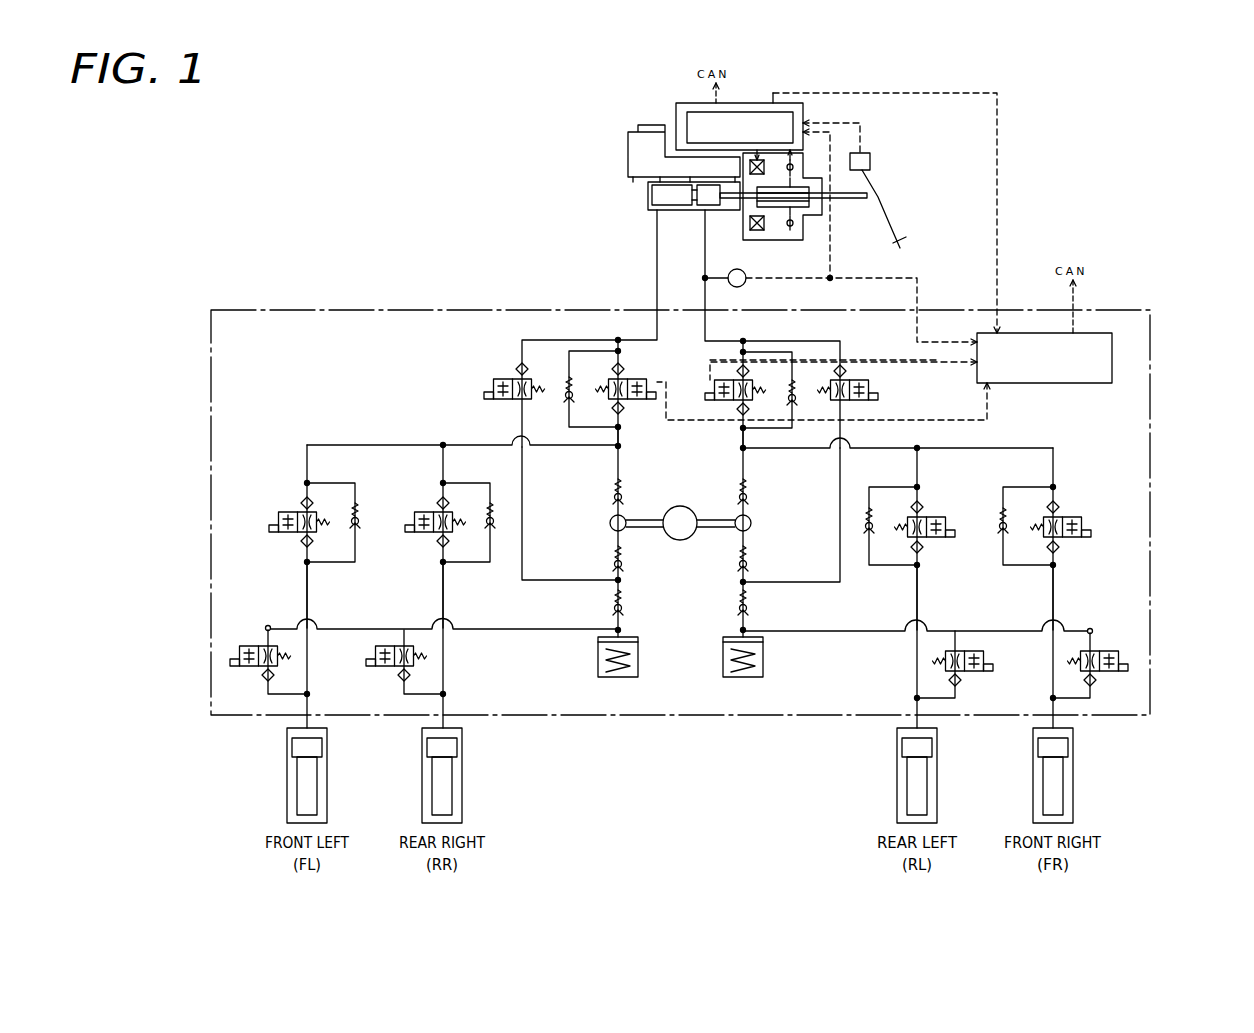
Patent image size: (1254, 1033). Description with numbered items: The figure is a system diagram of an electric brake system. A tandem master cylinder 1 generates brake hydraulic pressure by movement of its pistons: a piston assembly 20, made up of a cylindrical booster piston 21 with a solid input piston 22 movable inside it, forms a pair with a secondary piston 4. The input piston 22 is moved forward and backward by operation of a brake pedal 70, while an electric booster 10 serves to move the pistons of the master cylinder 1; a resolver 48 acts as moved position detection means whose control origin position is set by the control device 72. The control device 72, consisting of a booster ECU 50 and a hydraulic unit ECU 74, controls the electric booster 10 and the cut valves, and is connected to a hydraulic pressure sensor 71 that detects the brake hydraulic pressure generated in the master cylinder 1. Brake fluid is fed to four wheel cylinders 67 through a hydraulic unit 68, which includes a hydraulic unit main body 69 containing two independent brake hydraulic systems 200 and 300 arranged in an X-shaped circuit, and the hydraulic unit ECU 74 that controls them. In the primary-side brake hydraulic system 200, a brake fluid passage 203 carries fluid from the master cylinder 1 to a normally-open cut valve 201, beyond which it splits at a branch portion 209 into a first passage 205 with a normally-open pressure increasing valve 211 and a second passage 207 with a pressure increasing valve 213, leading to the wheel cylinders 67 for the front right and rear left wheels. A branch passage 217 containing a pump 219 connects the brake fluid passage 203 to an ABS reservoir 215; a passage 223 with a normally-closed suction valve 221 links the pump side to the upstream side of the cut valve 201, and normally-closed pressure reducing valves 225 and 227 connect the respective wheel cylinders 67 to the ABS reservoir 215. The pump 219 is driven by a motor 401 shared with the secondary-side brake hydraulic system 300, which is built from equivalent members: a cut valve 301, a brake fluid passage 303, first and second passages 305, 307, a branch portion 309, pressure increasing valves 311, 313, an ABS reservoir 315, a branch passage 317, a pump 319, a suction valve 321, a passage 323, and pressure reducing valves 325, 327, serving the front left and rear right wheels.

The tandem master cylinder 1 is at (648, 192).
The secondary piston 4 is at (680, 210).
The electric booster 10 is at (794, 250).
The piston assembly 20 is at (617, 240).
The booster piston 21 is at (672, 195).
The input piston 22 is at (727, 205).
The resolver 48 is at (797, 226).
The booster ECU 50 is at (755, 109).
The wheel cylinder 67 is at (327, 788).
The hydraulic unit 68 is at (1117, 313).
The hydraulic unit main body 69 is at (442, 625).
The brake pedal 70 is at (885, 217).
The hydraulic pressure sensor 71 is at (745, 285).
The control device 72 is at (733, 113).
The hydraulic unit ECU 74 is at (1112, 357).
The primary-side brake hydraulic system 200 is at (749, 738).
The primary-side cut valve 201 is at (704, 389).
The primary-side brake fluid passage 203 is at (731, 447).
The primary-side first passage 205 is at (1054, 593).
The primary-side second passage 207 is at (919, 593).
The primary-side branch portion between first and second passages 209 is at (917, 449).
The primary-side pressure increasing valve 211 is at (1066, 516).
The primary-side pressure increasing valve 213 is at (930, 516).
The primary ABS reservoir 215 is at (763, 658).
The primary ABS reservoir-side branch passage 217 is at (743, 466).
The pump 219 is at (751, 523).
The suction valve 221 is at (868, 389).
The passage 223 is at (840, 568).
The pressure reducing valve 225 is at (1112, 670).
The pressure reducing valve 227 is at (977, 670).
The secondary-side brake hydraulic system 300 is at (458, 734).
The secondary-side cut valve 301 is at (618, 370).
The secondary-side brake fluid passage 303 is at (618, 434).
The secondary-side first passage 305 is at (307, 591).
The secondary-side second passage 307 is at (443, 591).
The secondary-side branch portion between first and second passages 309 is at (440, 444).
The secondary-side pressure increasing valve 311 is at (292, 513).
The secondary-side pressure increasing valve 313 is at (428, 513).
The secondary ABS reservoir 315 is at (597, 658).
The secondary ABS reservoir-side branch passage 317 is at (617, 466).
The pump 319 is at (609, 523).
The suction valve 321 is at (494, 386).
The passage 323 is at (516, 568).
The pressure reducing valve 327 is at (378, 665).
The pressure reducing valve 325 is at (243, 665).
The motor 401 is at (680, 541).